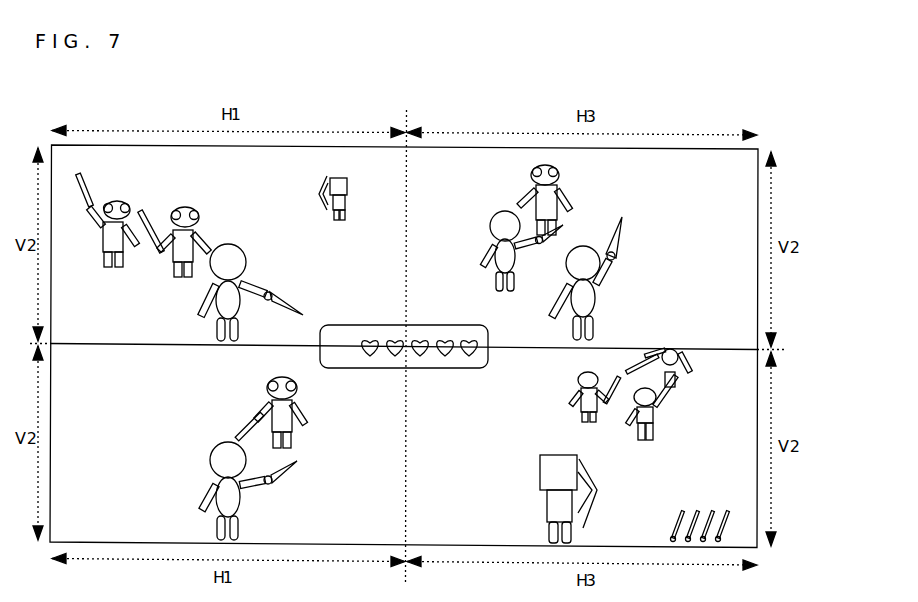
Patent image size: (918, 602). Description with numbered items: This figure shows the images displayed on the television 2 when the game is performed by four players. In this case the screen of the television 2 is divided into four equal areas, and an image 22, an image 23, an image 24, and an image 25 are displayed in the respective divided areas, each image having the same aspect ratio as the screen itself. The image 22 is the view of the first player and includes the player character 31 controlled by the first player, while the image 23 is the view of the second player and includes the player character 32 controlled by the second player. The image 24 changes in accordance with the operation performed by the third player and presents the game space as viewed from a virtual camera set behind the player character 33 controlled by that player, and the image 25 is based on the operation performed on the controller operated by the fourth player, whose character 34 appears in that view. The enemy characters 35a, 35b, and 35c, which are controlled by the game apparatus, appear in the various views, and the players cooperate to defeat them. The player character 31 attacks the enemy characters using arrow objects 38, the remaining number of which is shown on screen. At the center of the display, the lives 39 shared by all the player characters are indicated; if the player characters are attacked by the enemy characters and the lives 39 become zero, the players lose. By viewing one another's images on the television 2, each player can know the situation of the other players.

The television 2 is at (676, 122).
The image 22 is at (441, 391).
The image 23 is at (387, 325).
The image 24 is at (387, 391).
The image 25 is at (441, 325).
The lives 39 is at (346, 356).
The player character 31 is at (348, 181).
The player character 32 is at (237, 251).
The player character 33 is at (495, 214).
The player character 34 is at (586, 297).
The enemy character 35a is at (183, 208).
The enemy character 35b is at (118, 201).
The enemy character 35c is at (552, 166).
The arrow objects 38 is at (680, 512).